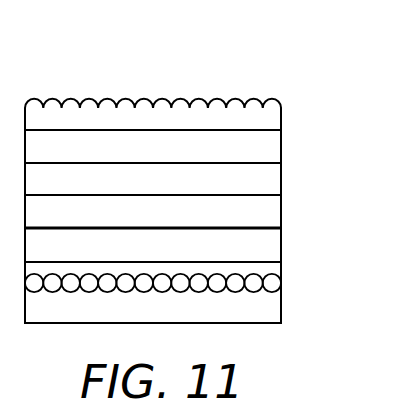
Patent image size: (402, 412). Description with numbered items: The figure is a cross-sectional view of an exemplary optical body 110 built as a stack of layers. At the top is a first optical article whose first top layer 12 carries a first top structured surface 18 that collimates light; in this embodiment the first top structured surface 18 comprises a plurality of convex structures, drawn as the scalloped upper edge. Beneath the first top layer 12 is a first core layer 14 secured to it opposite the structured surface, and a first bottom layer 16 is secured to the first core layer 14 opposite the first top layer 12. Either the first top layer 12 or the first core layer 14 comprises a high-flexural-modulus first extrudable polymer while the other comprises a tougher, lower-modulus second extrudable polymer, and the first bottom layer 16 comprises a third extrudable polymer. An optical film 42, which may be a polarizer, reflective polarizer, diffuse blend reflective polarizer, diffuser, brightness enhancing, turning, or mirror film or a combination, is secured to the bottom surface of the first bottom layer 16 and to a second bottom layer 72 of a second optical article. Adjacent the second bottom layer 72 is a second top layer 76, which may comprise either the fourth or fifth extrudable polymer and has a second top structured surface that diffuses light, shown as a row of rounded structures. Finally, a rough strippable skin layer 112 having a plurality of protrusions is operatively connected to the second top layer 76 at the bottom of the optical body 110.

The optical body 110 is at (218, 62).
The first top structured surface 18 is at (252, 100).
The first top layer 12 is at (270, 113).
The first core layer 14 is at (270, 148).
The first bottom layer 16 is at (270, 181).
The optical film 42 is at (270, 210).
The second bottom layer 72 is at (270, 244).
The second top layer 76 is at (274, 267).
The rough strippable skin layer 112 is at (270, 308).